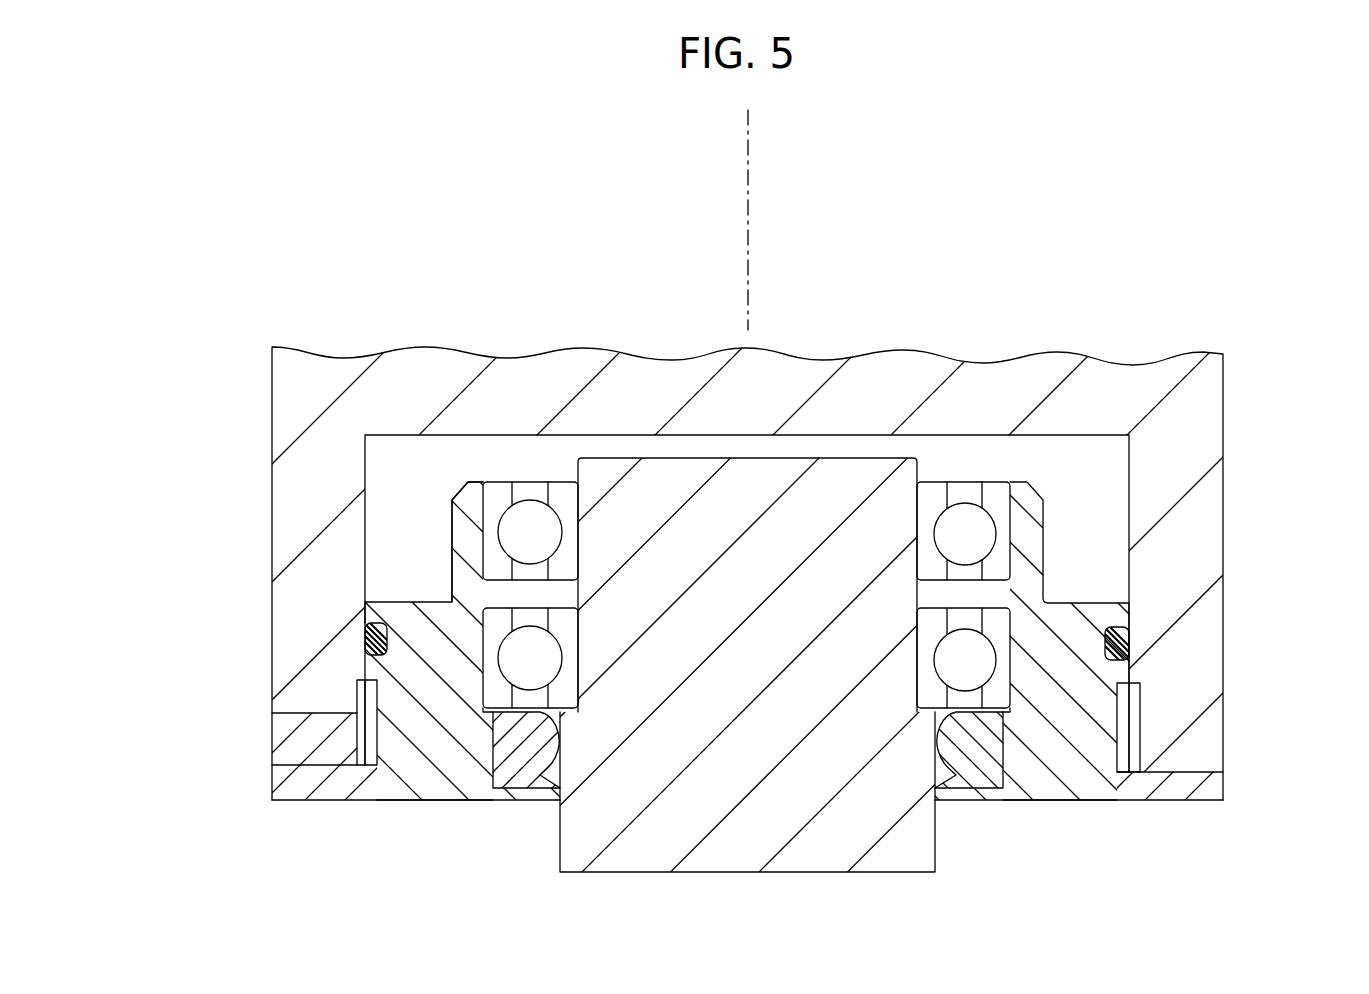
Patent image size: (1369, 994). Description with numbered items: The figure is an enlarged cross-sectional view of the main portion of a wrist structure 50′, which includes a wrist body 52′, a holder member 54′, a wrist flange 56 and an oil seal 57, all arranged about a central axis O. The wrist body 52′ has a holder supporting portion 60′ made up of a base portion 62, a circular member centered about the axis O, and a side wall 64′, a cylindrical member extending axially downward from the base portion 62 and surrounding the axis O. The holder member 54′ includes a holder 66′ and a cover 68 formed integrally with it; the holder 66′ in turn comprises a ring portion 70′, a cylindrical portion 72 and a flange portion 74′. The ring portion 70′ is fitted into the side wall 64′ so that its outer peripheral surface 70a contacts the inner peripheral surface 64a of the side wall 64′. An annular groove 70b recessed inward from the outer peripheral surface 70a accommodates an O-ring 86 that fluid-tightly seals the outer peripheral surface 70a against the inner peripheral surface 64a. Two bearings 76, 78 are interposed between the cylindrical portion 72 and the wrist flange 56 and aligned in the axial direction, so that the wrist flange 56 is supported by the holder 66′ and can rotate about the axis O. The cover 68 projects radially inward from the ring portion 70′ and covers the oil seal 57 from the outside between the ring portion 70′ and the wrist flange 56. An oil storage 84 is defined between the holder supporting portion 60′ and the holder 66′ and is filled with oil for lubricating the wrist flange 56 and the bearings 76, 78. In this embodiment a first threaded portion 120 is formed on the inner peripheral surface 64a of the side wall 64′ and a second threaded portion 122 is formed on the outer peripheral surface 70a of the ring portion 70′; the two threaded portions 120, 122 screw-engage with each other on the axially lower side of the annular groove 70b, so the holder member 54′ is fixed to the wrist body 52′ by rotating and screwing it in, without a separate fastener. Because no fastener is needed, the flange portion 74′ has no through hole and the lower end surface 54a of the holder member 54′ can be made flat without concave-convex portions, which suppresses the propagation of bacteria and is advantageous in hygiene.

The axis O is at (750, 166).
The wrist structure 50′ is at (1085, 196).
The wrist body 52′ is at (684, 510).
The holder member 54′ is at (424, 802).
The lower end surface 54a is at (1063, 803).
The wrist flange 56 is at (766, 668).
The oil seal 57 is at (522, 767).
The holder supporting portion 60′ is at (684, 555).
The base portion 62 is at (766, 406).
The side wall 64′ is at (1198, 571).
The inner peripheral surface 64a is at (1138, 487).
The holder 66′ is at (1062, 593).
The cover 68 is at (980, 797).
The ring portion 70′ is at (431, 645).
The outer peripheral surface 70a is at (357, 713).
The annular groove 70b is at (365, 630).
The cylindrical portion 72 is at (465, 548).
The flange portion 74′ is at (308, 788).
The bearing 76 is at (582, 540).
The bearing 78 is at (582, 643).
The oil storage 84 is at (424, 476).
The O-ring 86 is at (365, 638).
The first threaded portion 120 is at (1128, 700).
The second threaded portion 122 is at (1123, 737).